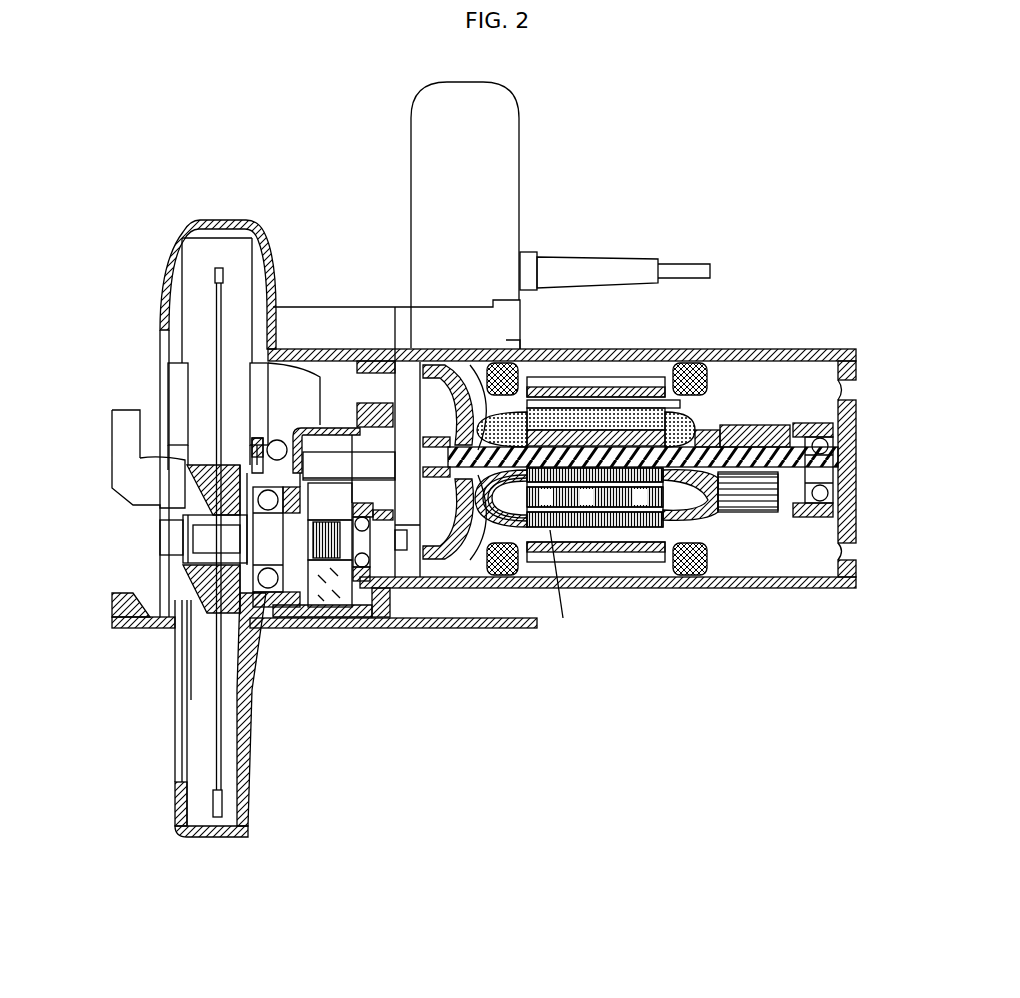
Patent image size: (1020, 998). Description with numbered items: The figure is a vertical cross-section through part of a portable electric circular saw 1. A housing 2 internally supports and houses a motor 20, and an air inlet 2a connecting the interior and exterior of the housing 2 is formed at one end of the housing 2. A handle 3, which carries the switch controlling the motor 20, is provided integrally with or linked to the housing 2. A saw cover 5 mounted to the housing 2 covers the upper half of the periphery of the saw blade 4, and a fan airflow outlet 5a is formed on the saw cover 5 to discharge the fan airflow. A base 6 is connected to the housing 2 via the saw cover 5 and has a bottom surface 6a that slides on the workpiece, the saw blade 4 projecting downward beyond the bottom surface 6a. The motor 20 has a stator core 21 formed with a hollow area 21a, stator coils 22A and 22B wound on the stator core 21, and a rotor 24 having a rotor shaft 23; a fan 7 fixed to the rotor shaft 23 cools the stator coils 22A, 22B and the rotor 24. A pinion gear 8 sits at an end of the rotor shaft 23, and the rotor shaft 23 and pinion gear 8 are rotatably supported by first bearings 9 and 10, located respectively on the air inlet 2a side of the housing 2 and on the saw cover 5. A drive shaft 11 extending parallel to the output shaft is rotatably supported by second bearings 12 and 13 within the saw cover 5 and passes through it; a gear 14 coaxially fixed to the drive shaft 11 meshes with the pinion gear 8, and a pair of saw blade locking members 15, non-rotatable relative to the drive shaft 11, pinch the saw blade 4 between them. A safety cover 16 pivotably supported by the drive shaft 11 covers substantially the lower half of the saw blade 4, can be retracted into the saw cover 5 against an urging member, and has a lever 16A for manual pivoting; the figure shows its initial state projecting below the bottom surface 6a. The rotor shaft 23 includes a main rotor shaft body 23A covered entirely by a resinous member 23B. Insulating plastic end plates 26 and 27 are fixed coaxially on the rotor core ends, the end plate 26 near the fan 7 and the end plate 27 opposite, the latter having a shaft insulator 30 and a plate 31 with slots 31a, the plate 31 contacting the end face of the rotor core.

The portable electric circular saw 1 is at (762, 158).
The housing 2 is at (850, 352).
The air inlet 2a is at (858, 392).
The handle 3 is at (455, 108).
The saw blade 4 is at (215, 725).
The saw cover 5 is at (228, 218).
The fan airflow outlet 5a is at (357, 378).
The base 6 is at (131, 630).
The bottom surface 6a is at (480, 630).
The fan 7 is at (438, 590).
The pinion gear 8 is at (402, 590).
The first bearing 9 is at (850, 447).
The first bearing 10 is at (357, 427).
The drive shaft 11 is at (220, 542).
The second bearing 12 is at (282, 630).
The second bearing 13 is at (368, 593).
The gear 14 is at (333, 613).
The saw blade locking member 15 is at (200, 470).
The safety cover 16 is at (252, 737).
The lever 16A is at (130, 440).
The motor 20 is at (655, 368).
The stator core 21 is at (588, 405).
The hollow area 21a is at (553, 403).
The stator coil 22A is at (698, 360).
The stator coil 22B is at (703, 585).
The rotor shaft 23 is at (595, 530).
The main rotor shaft body 23A is at (647, 530).
The resinous member 23B is at (626, 410).
The rotor 24 is at (717, 532).
The end plate 26 is at (514, 349).
The end plate 27 is at (783, 492).
The shaft insulator 30 is at (735, 428).
The plate 31 is at (708, 430).
The slot 31a is at (697, 428).